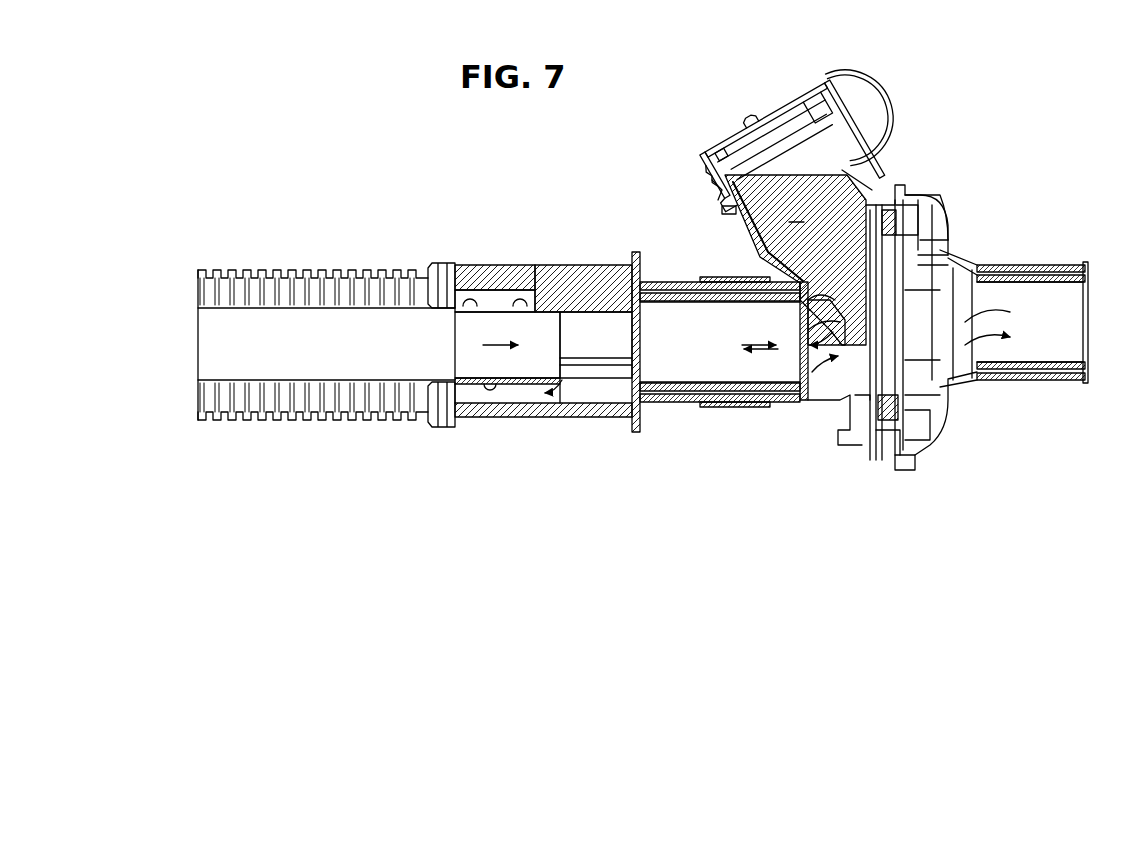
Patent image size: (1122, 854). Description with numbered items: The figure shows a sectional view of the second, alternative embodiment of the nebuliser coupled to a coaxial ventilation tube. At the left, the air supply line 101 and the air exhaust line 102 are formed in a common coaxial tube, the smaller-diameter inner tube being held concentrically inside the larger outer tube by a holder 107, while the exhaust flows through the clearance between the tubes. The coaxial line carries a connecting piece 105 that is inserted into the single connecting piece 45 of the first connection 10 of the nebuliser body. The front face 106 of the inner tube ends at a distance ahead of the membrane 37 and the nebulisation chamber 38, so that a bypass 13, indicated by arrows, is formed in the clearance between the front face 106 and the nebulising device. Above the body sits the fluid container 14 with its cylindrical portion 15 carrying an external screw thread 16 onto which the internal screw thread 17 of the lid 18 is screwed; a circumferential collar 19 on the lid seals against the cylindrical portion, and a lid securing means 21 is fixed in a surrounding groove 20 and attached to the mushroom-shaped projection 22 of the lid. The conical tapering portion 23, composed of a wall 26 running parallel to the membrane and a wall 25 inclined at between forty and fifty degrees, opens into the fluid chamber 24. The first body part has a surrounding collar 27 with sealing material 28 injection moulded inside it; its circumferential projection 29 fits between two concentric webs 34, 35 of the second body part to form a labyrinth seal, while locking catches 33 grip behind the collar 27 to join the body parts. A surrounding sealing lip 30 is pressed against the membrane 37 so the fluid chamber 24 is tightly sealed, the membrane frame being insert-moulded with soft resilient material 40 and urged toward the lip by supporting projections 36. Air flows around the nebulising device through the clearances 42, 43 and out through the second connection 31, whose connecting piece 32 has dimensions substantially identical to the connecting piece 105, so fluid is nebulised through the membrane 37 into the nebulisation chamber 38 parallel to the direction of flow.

The first connection 10 is at (690, 275).
The bypass 13 is at (603, 390).
The fluid container 14 is at (906, 78).
The cylindrical portion 15 is at (866, 176).
The external screw thread 16 is at (712, 187).
The internal screw thread 17 is at (698, 158).
The lid 18 is at (718, 125).
The circumferential collar 19 is at (835, 92).
The surrounding groove 20 is at (880, 128).
The lid securing means 21 is at (814, 82).
The mushroom-shaped projection 22 is at (752, 105).
The tapering portion 23 is at (797, 270).
The fluid chamber 24 is at (822, 403).
The wall 25 is at (790, 288).
The wall 26 is at (806, 324).
The surrounding collar 27 is at (920, 195).
The sealing material 28 is at (925, 205).
The circumferential projection 29 is at (945, 218).
The sealing lip 30 is at (868, 402).
The second connection 31 is at (1048, 265).
The connecting piece 32 is at (1045, 382).
The locking catches 33 is at (903, 195).
The web 34 is at (945, 212).
The web 35 is at (950, 240).
The supporting projections 36 is at (940, 248).
The membrane 37 is at (930, 425).
The nebulisation chamber 38 is at (940, 400).
The soft resilient material 40 is at (915, 455).
The clearance 42 is at (880, 425).
The clearance 43 is at (883, 437).
The connecting piece 45 is at (725, 403).
The air supply line 101 is at (407, 380).
The air exhaust line 102 is at (407, 283).
The connecting piece 105 is at (662, 403).
The front face 106 is at (562, 390).
The holder 107 is at (560, 265).